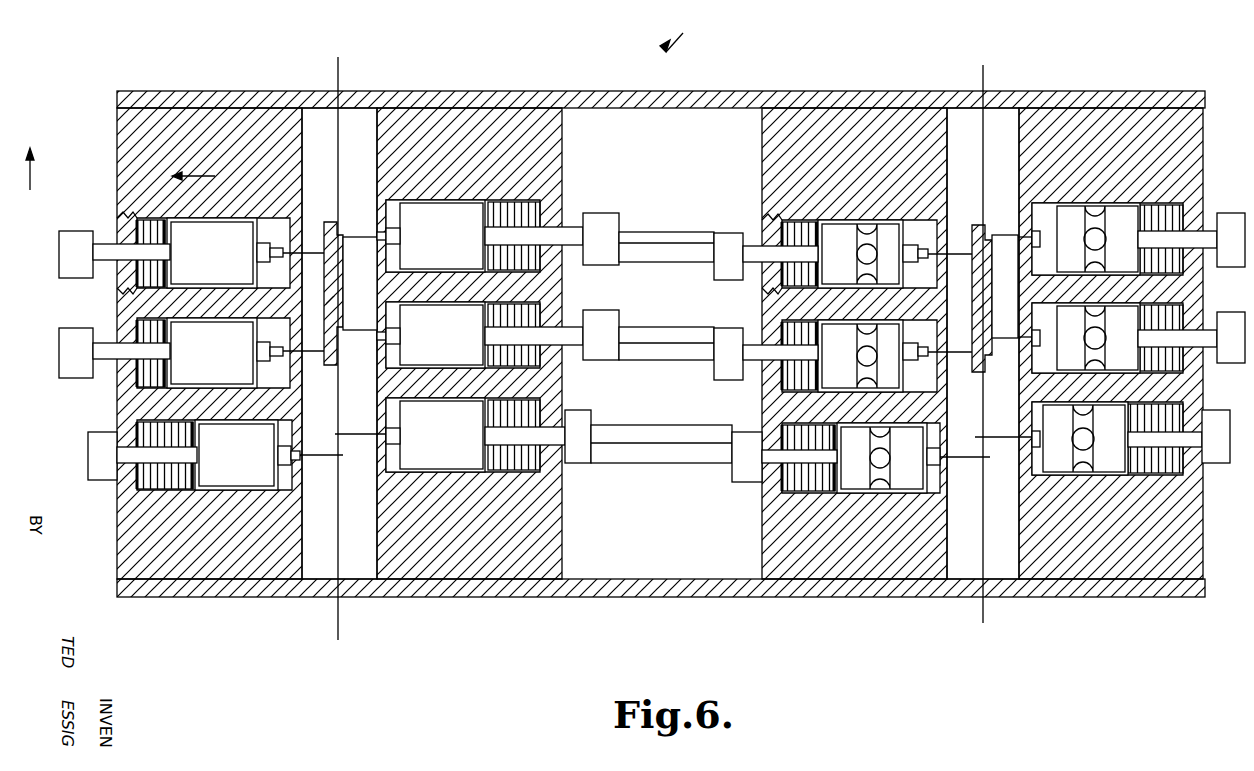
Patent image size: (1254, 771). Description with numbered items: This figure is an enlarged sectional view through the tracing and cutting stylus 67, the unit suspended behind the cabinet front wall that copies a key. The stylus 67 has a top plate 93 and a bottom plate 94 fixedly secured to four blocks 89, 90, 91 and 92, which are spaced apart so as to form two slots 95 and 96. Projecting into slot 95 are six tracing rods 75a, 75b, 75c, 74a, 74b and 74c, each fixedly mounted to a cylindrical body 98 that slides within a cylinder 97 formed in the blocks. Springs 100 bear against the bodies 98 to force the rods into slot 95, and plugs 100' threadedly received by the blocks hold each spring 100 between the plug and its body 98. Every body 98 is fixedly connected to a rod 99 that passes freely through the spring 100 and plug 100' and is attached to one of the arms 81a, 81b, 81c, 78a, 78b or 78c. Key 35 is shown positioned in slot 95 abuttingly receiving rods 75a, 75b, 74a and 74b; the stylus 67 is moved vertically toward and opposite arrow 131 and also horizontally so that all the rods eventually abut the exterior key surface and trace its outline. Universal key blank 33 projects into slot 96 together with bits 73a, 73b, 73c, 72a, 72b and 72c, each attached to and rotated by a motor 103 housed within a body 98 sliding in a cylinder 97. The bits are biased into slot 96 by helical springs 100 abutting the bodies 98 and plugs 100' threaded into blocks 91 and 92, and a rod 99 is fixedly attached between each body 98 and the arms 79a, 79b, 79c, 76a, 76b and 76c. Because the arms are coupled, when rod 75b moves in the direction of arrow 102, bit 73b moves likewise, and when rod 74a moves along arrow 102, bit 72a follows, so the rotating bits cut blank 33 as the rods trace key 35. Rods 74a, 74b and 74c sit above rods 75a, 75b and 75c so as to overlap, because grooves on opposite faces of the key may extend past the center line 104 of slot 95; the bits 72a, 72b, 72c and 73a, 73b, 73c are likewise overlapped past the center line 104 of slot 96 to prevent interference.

The tracing and cutting stylus 67 is at (685, 32).
The top plate 93 is at (393, 100).
The bottom plate 94 is at (470, 597).
The block 89 is at (220, 579).
The block 90 is at (545, 535).
The block 91 is at (772, 532).
The block 92 is at (1035, 522).
The slot 95 is at (365, 174).
The slot 96 is at (1010, 174).
The center line 104 is at (338, 65).
The rod 99 is at (112, 260).
The spring 100 is at (485, 334).
The plug 100' is at (423, 243).
The cylinder 97 is at (208, 205).
The cylindrical body 98 is at (247, 218).
The motor 103 is at (852, 265).
The arm 81a is at (72, 257).
The arm 81b is at (72, 355).
The arm 81c is at (92, 449).
The arm 78a is at (647, 238).
The arm 78b is at (643, 333).
The arm 78c is at (622, 435).
The arm 79a is at (672, 258).
The arm 79b is at (675, 358).
The arm 79c is at (700, 460).
The arm 76a is at (1235, 215).
The arm 76b is at (1238, 320).
The arm 76c is at (1225, 425).
The tracing rod 75a is at (325, 235).
The tracing rod 75b is at (322, 360).
The tracing rod 75c is at (322, 460).
The tracing rod 74a is at (360, 237).
The tracing rod 74b is at (362, 335).
The tracing rod 74c is at (362, 438).
The bit 73a is at (960, 250).
The bit 73b is at (960, 360).
The bit 73c is at (965, 462).
The bit 72a is at (996, 240).
The bit 72b is at (1006, 340).
The bit 72c is at (1000, 435).
The key 35 is at (330, 303).
The universal key blank 33 is at (972, 305).
The arrow 102 is at (220, 177).
The arrow 131 is at (35, 178).